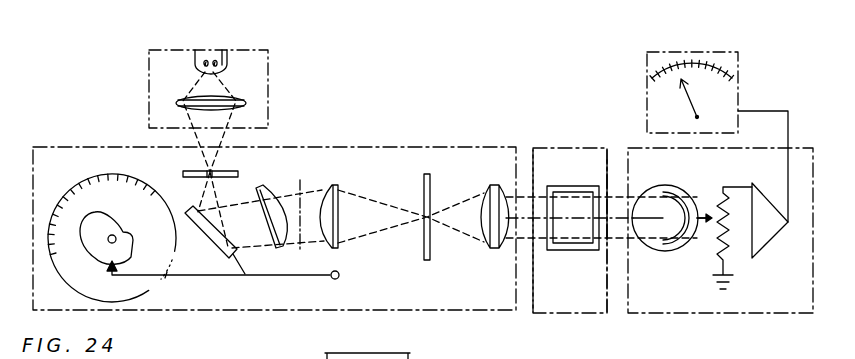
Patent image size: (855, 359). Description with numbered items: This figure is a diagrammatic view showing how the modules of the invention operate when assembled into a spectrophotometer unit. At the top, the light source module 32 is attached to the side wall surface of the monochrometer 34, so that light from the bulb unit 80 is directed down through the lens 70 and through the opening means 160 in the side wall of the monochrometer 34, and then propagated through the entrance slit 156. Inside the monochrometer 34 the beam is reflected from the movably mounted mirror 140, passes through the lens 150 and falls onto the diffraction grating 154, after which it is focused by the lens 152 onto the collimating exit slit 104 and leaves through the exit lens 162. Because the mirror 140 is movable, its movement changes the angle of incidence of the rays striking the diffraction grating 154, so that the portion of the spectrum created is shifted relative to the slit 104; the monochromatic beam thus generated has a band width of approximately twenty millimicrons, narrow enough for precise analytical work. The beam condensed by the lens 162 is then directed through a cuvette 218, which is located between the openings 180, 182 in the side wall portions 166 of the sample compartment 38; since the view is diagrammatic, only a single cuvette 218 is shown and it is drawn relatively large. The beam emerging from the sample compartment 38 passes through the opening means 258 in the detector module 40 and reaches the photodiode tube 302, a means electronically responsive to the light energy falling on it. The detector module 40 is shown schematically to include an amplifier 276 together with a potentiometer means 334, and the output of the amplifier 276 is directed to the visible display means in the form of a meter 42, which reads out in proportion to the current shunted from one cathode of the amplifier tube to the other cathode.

The light source module 32 is at (294, 112).
The bulb unit 80 is at (225, 62).
The lens 70 is at (183, 105).
The opening means 160 is at (207, 148).
The monochrometer 34 is at (395, 131).
The movably mounted mirror 140 is at (213, 240).
The entrance slit 156 is at (213, 172).
The lens 150 is at (273, 240).
The diffraction grating 154 is at (300, 200).
The lens 152 is at (338, 215).
The collimating exit slit 104 is at (428, 215).
The exit lens 162 is at (488, 204).
The sample compartment 38 is at (576, 133).
The opening 180 is at (530, 227).
The opening 182 is at (620, 227).
The side wall portions 166 is at (610, 170).
The cuvette 218 is at (576, 250).
The detector module 40 is at (810, 140).
The meter 42 is at (753, 100).
The opening means 258 is at (633, 218).
The photodiode tube 302 is at (660, 251).
The potentiometer means 334 is at (705, 245).
The amplifier 276 is at (770, 240).